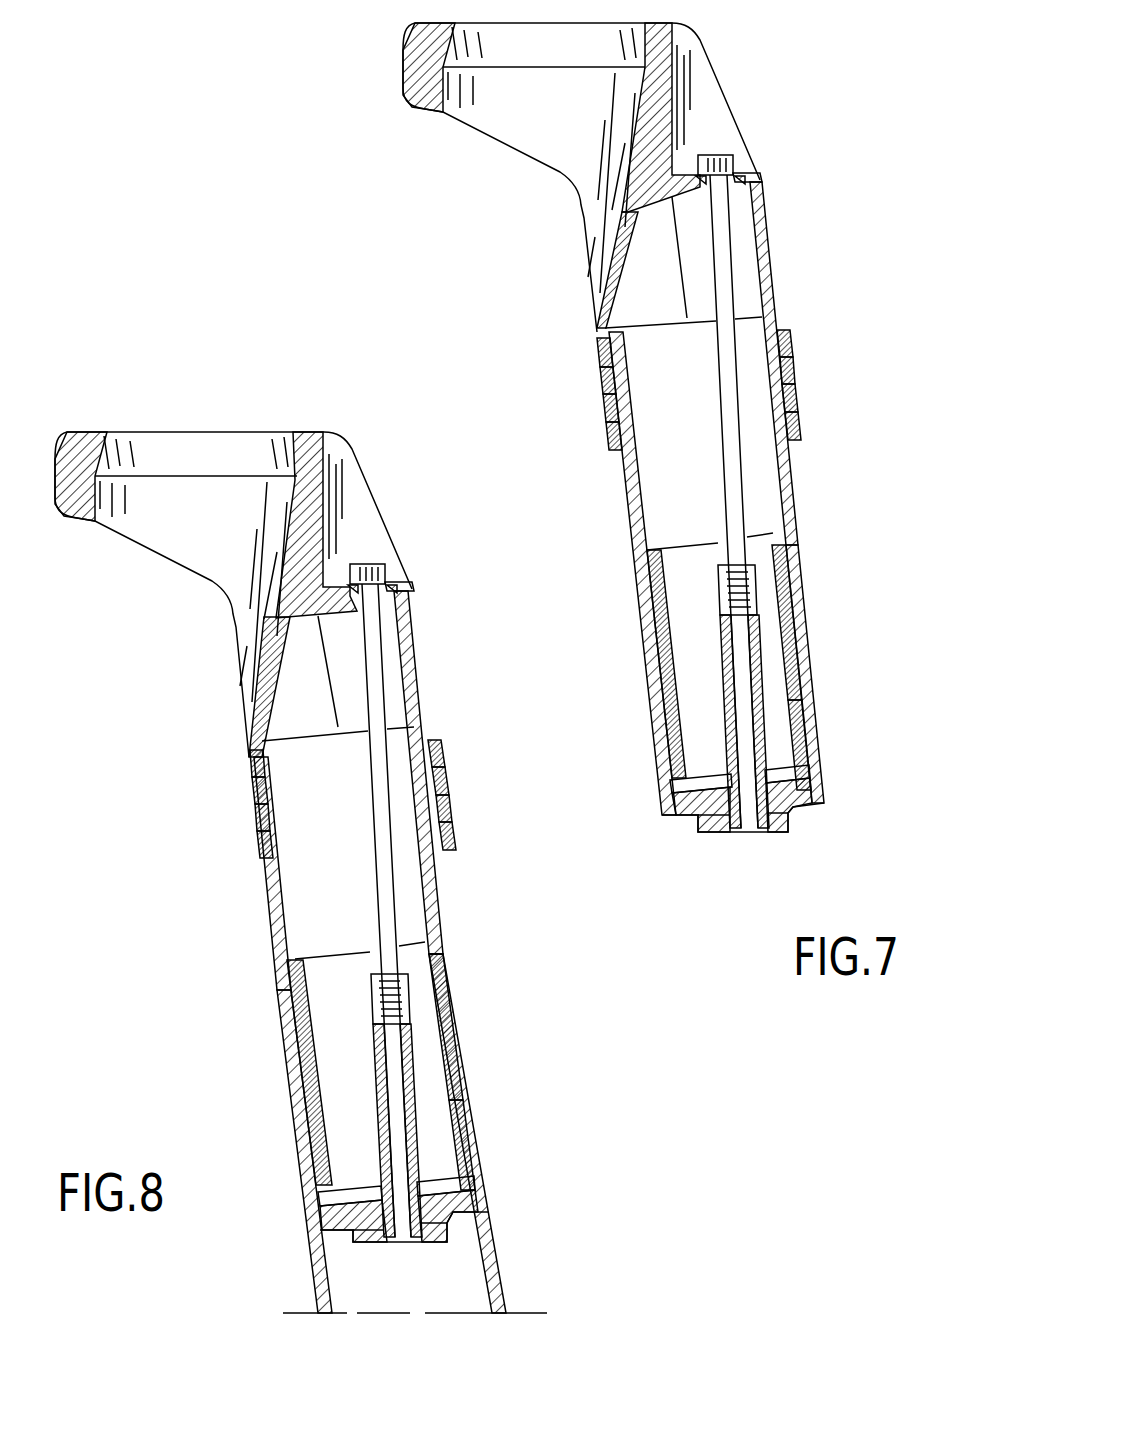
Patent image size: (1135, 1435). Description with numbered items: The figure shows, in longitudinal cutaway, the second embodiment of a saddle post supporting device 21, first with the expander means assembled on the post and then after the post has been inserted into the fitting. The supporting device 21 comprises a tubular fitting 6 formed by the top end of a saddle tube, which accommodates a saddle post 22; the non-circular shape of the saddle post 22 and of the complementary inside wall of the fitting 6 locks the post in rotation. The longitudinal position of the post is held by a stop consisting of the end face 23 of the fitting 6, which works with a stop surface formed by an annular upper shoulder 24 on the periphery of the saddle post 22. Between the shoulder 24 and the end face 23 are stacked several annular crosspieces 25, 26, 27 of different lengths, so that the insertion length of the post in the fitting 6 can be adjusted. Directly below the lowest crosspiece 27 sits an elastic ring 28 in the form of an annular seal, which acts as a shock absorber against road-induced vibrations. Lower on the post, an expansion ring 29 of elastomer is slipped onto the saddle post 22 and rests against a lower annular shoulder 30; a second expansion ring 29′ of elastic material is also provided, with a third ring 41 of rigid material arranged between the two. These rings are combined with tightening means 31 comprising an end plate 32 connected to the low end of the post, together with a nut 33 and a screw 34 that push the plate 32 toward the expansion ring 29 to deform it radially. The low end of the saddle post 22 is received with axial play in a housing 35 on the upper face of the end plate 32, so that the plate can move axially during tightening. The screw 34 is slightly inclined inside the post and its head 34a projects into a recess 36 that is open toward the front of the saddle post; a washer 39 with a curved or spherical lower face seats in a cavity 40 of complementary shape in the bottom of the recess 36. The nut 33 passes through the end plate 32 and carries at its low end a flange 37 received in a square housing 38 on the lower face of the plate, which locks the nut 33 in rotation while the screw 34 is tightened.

In FIG. 8, the tubular fitting 6 is at (290, 1045).
In FIG. 8, the supporting device 21 is at (262, 943).
In FIG. 7, the saddle post 22 is at (582, 215).
In FIG. 8, the saddle post 22 is at (232, 620).
In FIG. 8, the end face 23 is at (450, 850).
In FIG. 7, the annular upper shoulder 24 is at (600, 330).
In FIG. 8, the annular upper shoulder 24 is at (428, 742).
In FIG. 7, the crosspiece 25 is at (786, 341).
In FIG. 8, the crosspiece 25 is at (262, 784).
In FIG. 7, the crosspiece 26 is at (790, 366).
In FIG. 8, the crosspiece 26 is at (262, 800).
In FIG. 7, the crosspiece 27 is at (794, 390).
In FIG. 8, the crosspiece 27 is at (266, 823).
In FIG. 7, the elastic ring 28 is at (800, 420).
In FIG. 8, the elastic ring 28 is at (268, 848).
In FIG. 7, the expansion ring 29 is at (800, 576).
In FIG. 8, the expansion ring 29 is at (460, 968).
In FIG. 7, the expansion ring 29′ is at (818, 722).
In FIG. 8, the expansion ring 29′ is at (478, 1145).
In FIG. 7, the lower annular shoulder 30 is at (637, 595).
In FIG. 8, the lower annular shoulder 30 is at (290, 990).
In FIG. 7, the tightening means 31 is at (838, 778).
In FIG. 8, the tightening means 31 is at (432, 1152).
In FIG. 7, the end plate 32 is at (674, 825).
In FIG. 8, the end plate 32 is at (325, 1228).
In FIG. 7, the nut 33 is at (756, 630).
In FIG. 8, the nut 33 is at (408, 1030).
In FIG. 7, the screw 34 is at (740, 480).
In FIG. 8, the screw 34 is at (385, 793).
In FIG. 7, the screw head 34a is at (738, 157).
In FIG. 8, the screw head 34a is at (388, 568).
In FIG. 7, the housing 35 is at (676, 783).
In FIG. 8, the housing 35 is at (335, 1196).
In FIG. 7, the recess 36 is at (705, 85).
In FIG. 8, the recess 36 is at (352, 488).
In FIG. 7, the flange 37 is at (770, 822).
In FIG. 8, the flange 37 is at (432, 1240).
In FIG. 7, the housing 38 is at (786, 798).
In FIG. 8, the housing 38 is at (438, 1208).
In FIG. 7, the washer 39 is at (762, 180).
In FIG. 8, the washer 39 is at (414, 592).
In FIG. 7, the cavity 40 is at (673, 213).
In FIG. 8, the cavity 40 is at (340, 612).
In FIG. 7, the third ring 41 is at (800, 650).
In FIG. 8, the third ring 41 is at (468, 1060).